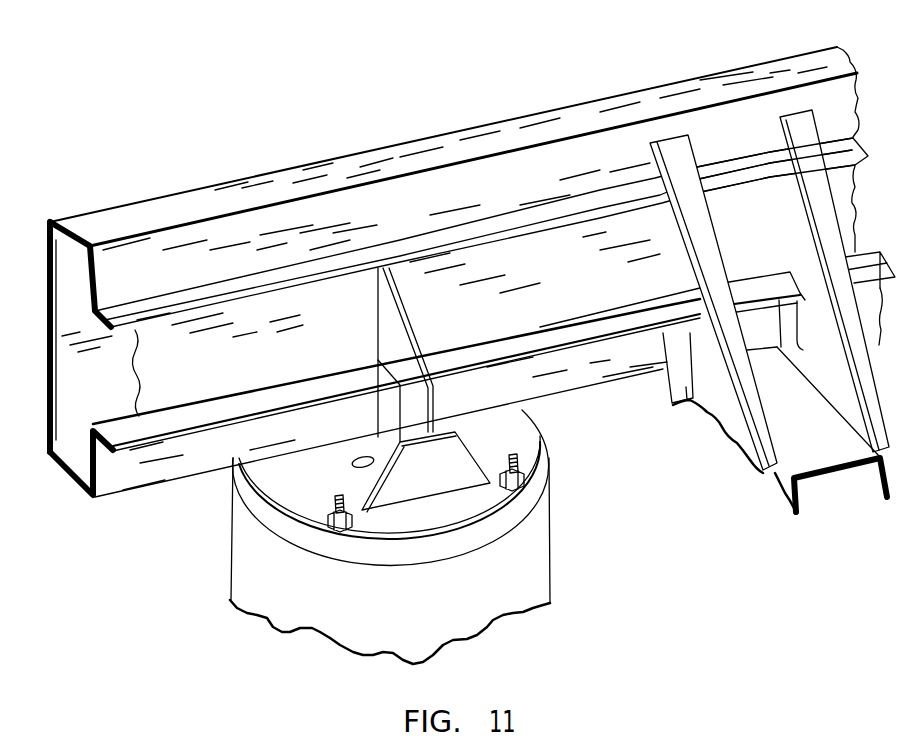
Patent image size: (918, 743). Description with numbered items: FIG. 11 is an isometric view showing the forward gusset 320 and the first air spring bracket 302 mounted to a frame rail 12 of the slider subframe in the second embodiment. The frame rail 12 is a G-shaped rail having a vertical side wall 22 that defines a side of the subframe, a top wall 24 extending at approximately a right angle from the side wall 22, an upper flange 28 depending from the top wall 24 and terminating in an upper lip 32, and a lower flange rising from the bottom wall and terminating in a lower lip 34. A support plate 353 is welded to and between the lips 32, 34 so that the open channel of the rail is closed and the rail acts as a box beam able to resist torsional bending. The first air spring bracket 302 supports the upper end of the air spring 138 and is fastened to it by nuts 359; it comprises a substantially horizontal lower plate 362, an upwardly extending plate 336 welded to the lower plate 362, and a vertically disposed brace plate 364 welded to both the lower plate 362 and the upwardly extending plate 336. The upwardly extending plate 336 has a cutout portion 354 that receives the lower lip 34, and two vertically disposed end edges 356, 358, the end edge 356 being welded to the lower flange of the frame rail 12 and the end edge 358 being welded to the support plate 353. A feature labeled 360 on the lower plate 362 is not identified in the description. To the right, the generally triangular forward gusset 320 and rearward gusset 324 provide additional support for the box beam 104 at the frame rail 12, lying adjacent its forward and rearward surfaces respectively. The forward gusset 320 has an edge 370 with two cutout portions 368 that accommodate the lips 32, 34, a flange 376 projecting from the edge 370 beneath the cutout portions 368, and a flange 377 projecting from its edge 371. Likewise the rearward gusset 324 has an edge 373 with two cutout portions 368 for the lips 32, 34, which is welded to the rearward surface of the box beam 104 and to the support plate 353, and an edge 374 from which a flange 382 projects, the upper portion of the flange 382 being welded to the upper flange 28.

The frame rail 12 is at (450, 272).
The side wall 22 is at (52, 350).
The top wall 24 is at (177, 206).
The upper flange 28 is at (561, 179).
The upper lip 32 is at (400, 247).
The lower lip 34 is at (550, 332).
The box beam 104 is at (832, 480).
The air spring 138 is at (383, 537).
The first air spring bracket 302 is at (376, 390).
The forward gusset 320 is at (728, 408).
The rearward gusset 324 is at (840, 385).
The upwardly extending plate 336 is at (383, 310).
The support plate 353 is at (554, 280).
The cutout portion 354 is at (386, 400).
The end edge 356 is at (380, 406).
The end edge 358 is at (378, 342).
The nuts 359 is at (524, 470).
The hole 360 is at (355, 468).
The lower plate 362 is at (325, 467).
The brace plate 364 is at (445, 475).
The cutout portions 368 is at (710, 327).
The edge 370 is at (690, 281).
The edge 371 is at (712, 231).
The edge 373 is at (786, 258).
The edge 374 is at (800, 197).
The flange 376 is at (677, 407).
The flange 377 is at (667, 150).
The flange 382 is at (805, 125).